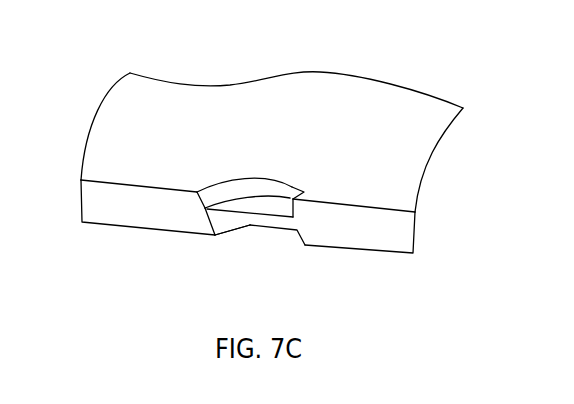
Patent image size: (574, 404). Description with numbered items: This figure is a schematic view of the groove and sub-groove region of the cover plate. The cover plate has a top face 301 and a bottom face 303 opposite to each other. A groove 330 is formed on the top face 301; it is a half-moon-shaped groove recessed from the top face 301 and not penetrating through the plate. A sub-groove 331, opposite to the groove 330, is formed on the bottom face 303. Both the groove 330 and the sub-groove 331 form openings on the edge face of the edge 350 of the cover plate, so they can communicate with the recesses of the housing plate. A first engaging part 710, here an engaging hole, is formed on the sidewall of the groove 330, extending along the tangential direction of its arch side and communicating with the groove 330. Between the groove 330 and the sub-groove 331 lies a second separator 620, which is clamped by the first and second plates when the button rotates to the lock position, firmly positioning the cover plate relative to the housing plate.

The top face 301 is at (202, 113).
The first engaging part 710 is at (295, 190).
The second separator 620 is at (265, 210).
The groove 330 is at (240, 205).
The sub-groove 331 is at (244, 232).
The bottom face 303 is at (348, 250).
The edge 350 is at (383, 237).